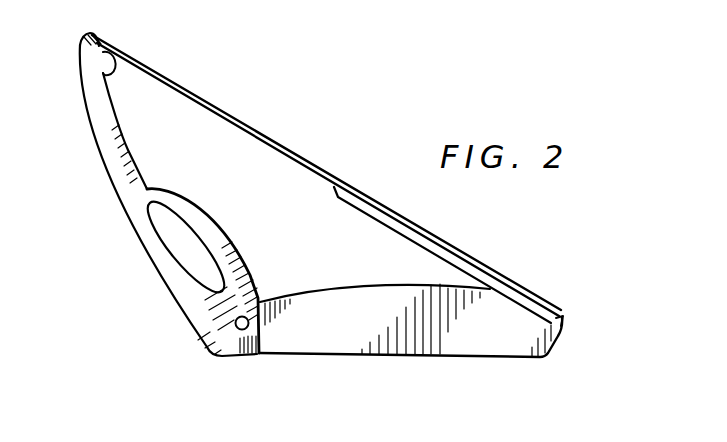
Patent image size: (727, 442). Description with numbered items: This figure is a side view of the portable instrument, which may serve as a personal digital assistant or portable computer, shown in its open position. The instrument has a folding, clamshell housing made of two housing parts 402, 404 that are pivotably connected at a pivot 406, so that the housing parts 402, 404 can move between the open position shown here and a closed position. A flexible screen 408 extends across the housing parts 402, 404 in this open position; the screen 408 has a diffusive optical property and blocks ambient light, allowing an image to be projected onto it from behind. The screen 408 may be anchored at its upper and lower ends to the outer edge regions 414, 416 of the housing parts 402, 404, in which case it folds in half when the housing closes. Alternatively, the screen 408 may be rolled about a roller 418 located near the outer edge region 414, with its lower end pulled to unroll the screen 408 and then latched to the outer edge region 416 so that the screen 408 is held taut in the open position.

The housing part 402 is at (330, 356).
The housing part 404 is at (103, 163).
The pivot 406 is at (238, 331).
The flexible screen 408 is at (248, 134).
The outer edge region 414 is at (91, 33).
The outer edge region 416 is at (565, 323).
The roller 418 is at (114, 70).